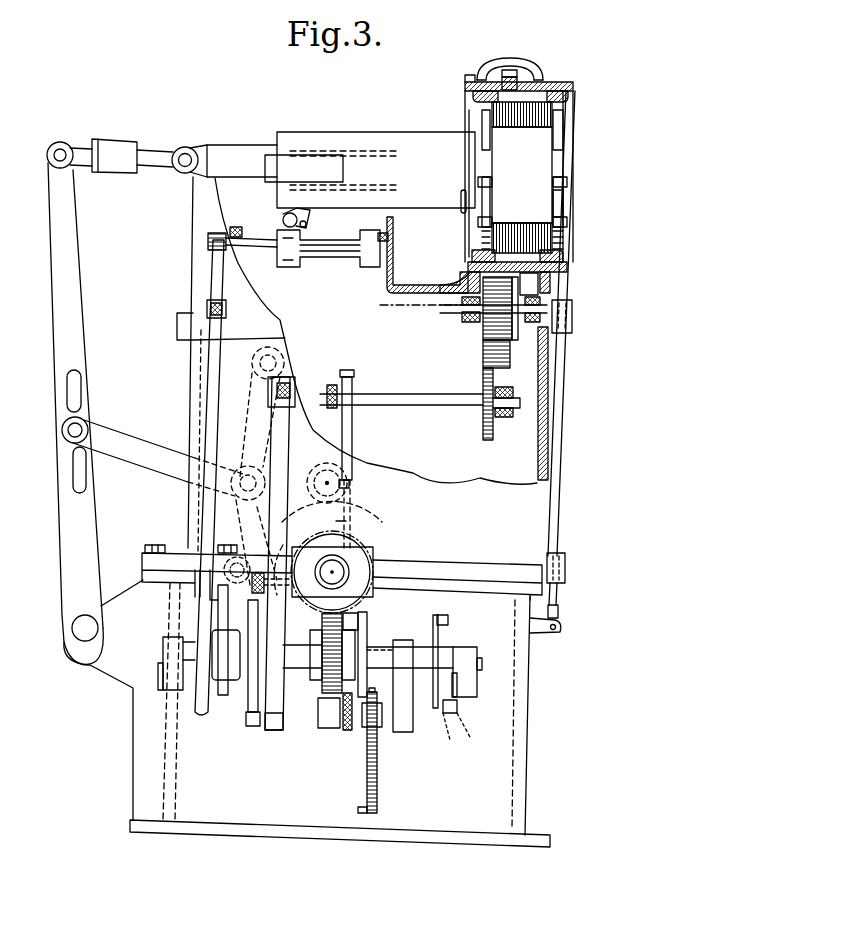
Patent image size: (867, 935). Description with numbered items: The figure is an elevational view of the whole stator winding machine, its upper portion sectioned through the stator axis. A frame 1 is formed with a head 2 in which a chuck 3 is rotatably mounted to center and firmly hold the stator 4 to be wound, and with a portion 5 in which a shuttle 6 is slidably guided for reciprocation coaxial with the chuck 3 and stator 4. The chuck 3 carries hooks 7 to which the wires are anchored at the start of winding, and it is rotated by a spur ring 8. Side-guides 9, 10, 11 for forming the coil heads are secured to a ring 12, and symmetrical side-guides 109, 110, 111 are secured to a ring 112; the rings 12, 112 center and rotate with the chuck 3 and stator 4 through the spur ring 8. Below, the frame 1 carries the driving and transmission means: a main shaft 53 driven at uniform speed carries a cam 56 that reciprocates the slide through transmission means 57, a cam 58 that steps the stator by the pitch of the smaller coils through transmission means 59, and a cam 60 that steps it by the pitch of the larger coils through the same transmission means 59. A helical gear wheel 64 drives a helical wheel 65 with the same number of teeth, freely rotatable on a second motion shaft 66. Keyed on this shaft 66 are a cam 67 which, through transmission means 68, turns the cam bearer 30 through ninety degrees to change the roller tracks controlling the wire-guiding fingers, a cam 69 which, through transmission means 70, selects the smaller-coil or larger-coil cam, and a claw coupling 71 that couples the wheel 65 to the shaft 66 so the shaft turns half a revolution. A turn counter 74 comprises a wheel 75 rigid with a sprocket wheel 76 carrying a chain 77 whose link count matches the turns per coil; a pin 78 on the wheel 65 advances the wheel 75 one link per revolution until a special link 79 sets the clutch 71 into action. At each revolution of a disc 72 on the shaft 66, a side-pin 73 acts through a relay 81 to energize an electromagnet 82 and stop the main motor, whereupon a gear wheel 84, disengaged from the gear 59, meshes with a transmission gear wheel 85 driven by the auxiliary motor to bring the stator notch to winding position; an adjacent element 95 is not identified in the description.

The frame 1 is at (538, 463).
The head 2 is at (522, 66).
The chuck 3 is at (573, 88).
The stator 4 is at (527, 119).
The portion 5 is at (230, 147).
The shuttle 6 is at (287, 185).
The hooks 7 is at (563, 272).
The spur ring 8 is at (506, 70).
The side-guide 9 is at (563, 204).
The side-guide 10 is at (567, 182).
The side-guide 11 is at (567, 224).
The ring 12 is at (567, 266).
The cam bearer 30 is at (328, 255).
The main shaft 53 is at (328, 578).
The cam 56 is at (297, 492).
The transmission means 57 is at (90, 418).
The cam 58 is at (302, 508).
The transmission means 59 is at (352, 435).
The cam 60 is at (352, 521).
The helical gear wheel 64 is at (360, 566).
The helical wheel 65 is at (318, 692).
The second motion shaft 66 is at (300, 660).
The cam 67 is at (225, 697).
The transmission means 68 is at (210, 272).
The cam 69 is at (253, 705).
The transmission means 70 is at (274, 732).
The claw coupling 71 is at (367, 640).
The disc 72 is at (440, 640).
The side-pin 73 is at (448, 620).
The turn counter 74 is at (348, 732).
The wheel 75 is at (338, 730).
The sprocket wheel 76 is at (380, 715).
The chain 77 is at (377, 777).
The pin 78 is at (358, 618).
The special link 79 is at (358, 810).
The relay 81 is at (457, 708).
The electromagnet 82 is at (535, 325).
The gear wheel 84 is at (483, 355).
The transmission gear wheel 85 is at (483, 330).
The shaft 95 is at (507, 411).
The side-guide 109 is at (462, 200).
The side-guide 110 is at (478, 182).
The side-guide 111 is at (478, 222).
The ring 112 is at (475, 95).